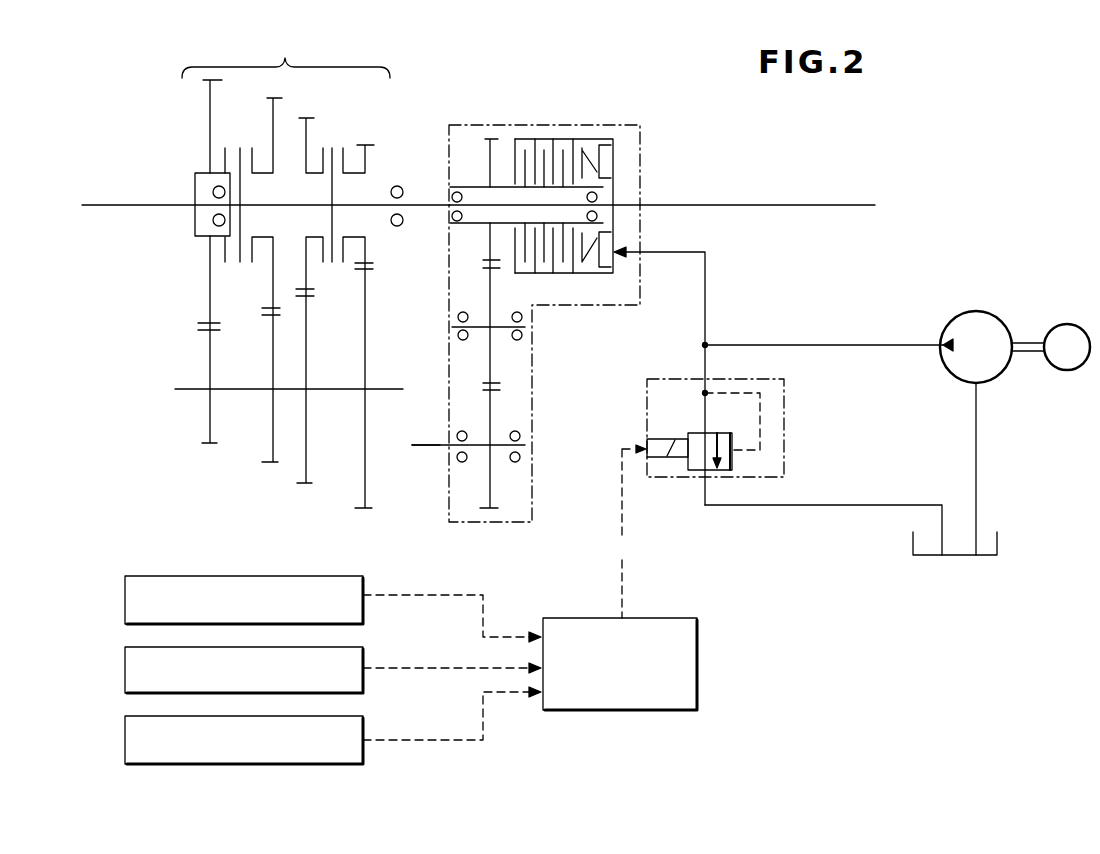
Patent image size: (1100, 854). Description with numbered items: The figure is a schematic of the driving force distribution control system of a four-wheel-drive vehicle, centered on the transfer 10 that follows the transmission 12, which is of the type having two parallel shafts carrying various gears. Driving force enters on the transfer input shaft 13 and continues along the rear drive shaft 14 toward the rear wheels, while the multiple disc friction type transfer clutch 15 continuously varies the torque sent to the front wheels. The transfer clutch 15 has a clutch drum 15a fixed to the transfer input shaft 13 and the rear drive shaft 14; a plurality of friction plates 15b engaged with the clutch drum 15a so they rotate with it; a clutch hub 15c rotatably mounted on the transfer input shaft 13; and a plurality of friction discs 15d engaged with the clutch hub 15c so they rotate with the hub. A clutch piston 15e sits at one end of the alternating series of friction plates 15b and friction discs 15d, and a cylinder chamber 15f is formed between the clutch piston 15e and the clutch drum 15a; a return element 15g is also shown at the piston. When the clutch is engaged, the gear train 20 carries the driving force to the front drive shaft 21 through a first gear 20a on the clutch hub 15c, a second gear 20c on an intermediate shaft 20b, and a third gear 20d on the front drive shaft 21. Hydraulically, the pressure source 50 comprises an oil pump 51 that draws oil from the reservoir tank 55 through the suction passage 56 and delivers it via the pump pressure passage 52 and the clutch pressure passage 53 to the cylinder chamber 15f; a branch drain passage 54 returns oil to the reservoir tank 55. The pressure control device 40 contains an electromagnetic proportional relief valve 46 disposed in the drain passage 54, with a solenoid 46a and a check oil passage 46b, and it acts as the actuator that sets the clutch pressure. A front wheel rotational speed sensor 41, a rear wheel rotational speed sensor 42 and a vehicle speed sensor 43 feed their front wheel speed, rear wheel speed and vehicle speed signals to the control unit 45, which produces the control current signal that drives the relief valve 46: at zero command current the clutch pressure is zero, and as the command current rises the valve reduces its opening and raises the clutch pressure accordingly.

The transfer 10 is at (647, 125).
The transmission 12 is at (289, 272).
The transfer input shaft 13 is at (422, 205).
The rear drive shaft 14 is at (765, 204).
The transfer clutch 15 is at (551, 138).
The clutch drum 15a is at (600, 140).
The friction plates 15b is at (533, 148).
The clutch hub 15c is at (472, 185).
The friction discs 15d is at (563, 160).
The clutch piston 15e is at (600, 170).
The cylinder chamber 15f is at (613, 243).
The return spring 15g is at (590, 160).
The gear train 20 is at (503, 368).
The first gear 20a is at (493, 247).
The intermediate shaft 20b is at (522, 323).
The second gear 20c is at (495, 377).
The third gear 20d is at (490, 417).
The front drive shaft 21 is at (422, 447).
The pressure control device 40 is at (834, 587).
The front wheel rotational speed sensor 41 is at (125, 600).
The rear wheel rotational speed sensor 42 is at (125, 658).
The vehicle speed sensor 43 is at (125, 731).
The control unit 45 is at (688, 618).
The electromagnetic proportional relief valve 46 is at (785, 437).
The solenoid 46a is at (673, 458).
The check oil passage 46b is at (760, 420).
The pressure source 50 is at (898, 317).
The oil pump 51 is at (976, 312).
The pump pressure passage 52 is at (802, 343).
The clutch pressure passage 53 is at (706, 320).
The branch drain passage 54 is at (833, 505).
The reservoir tank 55 is at (997, 543).
The suction passage 56 is at (976, 460).